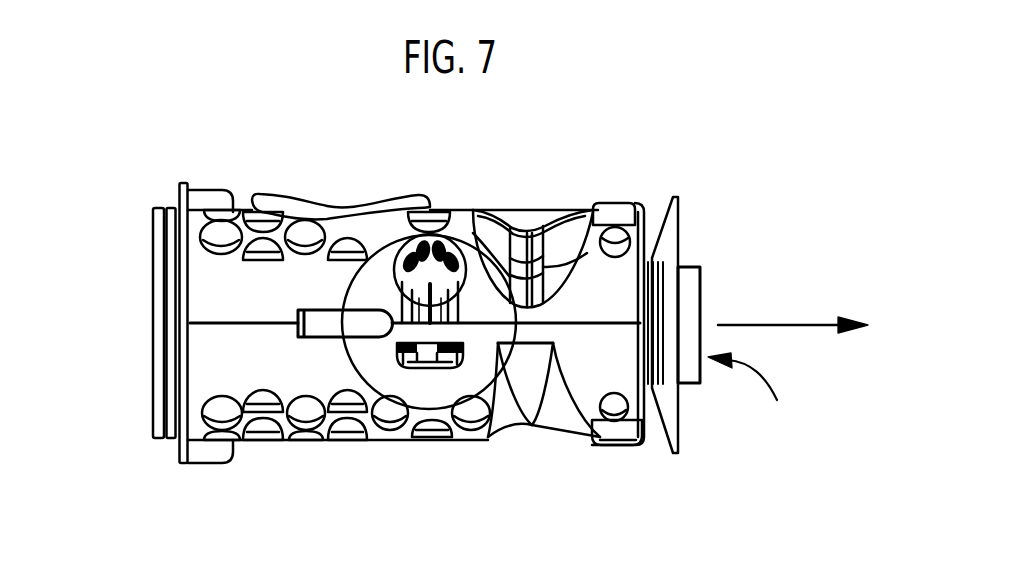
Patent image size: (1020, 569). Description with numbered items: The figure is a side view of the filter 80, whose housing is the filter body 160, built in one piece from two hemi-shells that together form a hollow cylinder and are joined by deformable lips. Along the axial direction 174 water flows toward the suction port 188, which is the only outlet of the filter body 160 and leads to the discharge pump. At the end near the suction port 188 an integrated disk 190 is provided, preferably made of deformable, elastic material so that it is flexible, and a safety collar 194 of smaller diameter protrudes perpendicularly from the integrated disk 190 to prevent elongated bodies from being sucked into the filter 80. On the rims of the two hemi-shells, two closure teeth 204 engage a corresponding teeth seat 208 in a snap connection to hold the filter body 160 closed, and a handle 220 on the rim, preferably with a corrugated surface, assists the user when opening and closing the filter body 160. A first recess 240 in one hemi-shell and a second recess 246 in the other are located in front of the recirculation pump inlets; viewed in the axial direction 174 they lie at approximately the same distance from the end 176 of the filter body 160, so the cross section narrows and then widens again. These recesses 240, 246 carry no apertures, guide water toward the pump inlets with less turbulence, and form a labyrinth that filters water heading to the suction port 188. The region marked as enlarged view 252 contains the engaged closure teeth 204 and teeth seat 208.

The filter 80 is at (665, 148).
The filter body 160 is at (217, 362).
The axial direction 174 is at (824, 318).
The end of filter body 176 is at (755, 396).
The suction port 188 is at (653, 367).
The integrated disk 190 is at (663, 243).
The safety collar 194 is at (686, 293).
The closure teeth 204 is at (415, 358).
The teeth seat 208 is at (400, 355).
The handle 220 is at (328, 323).
The first recess 240 is at (523, 223).
The second recess 246 is at (523, 425).
The enlarged view 252 is at (385, 235).